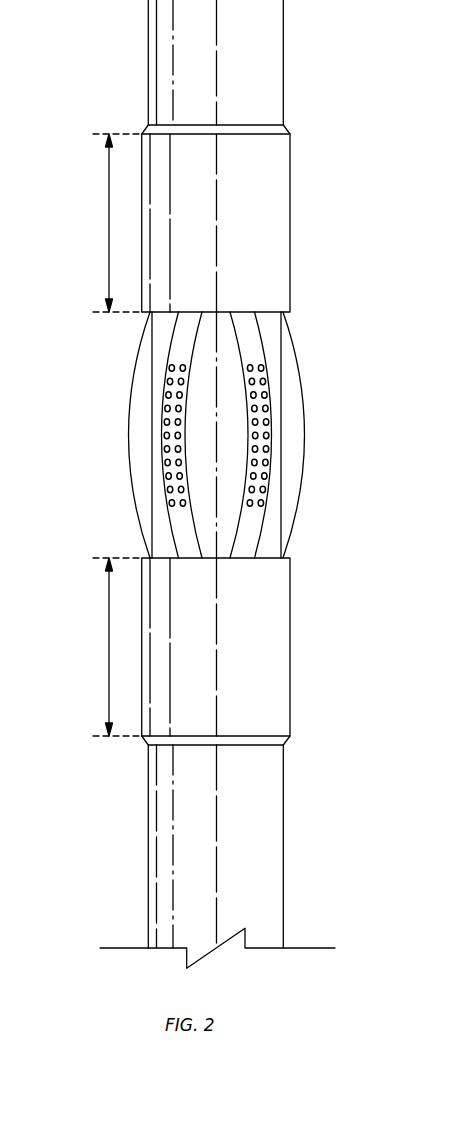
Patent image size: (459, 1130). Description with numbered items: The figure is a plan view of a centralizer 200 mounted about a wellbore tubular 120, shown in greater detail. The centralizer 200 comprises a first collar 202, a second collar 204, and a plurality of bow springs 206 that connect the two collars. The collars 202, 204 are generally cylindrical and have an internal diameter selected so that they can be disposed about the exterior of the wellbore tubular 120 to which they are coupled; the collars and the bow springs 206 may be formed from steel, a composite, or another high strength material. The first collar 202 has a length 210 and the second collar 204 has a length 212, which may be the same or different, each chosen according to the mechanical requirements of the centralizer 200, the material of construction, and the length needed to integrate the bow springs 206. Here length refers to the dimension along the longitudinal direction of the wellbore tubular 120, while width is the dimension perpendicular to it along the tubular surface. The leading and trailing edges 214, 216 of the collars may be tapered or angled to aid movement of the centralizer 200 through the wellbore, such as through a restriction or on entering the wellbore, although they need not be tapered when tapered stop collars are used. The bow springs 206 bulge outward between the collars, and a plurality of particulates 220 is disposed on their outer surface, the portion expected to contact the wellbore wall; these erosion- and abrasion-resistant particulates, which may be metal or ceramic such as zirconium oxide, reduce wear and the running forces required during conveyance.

The wellbore tubular 120 is at (148, 7).
The centralizer 200 is at (323, 173).
The first collar 202 is at (290, 617).
The second collar 204 is at (290, 285).
The bow springs 206 is at (137, 359).
The length of the first collar 210 is at (117, 647).
The length of the second collar 212 is at (117, 223).
The leading edge 214 is at (233, 746).
The trailing edge 216 is at (233, 124).
The particulates 220 is at (165, 428).